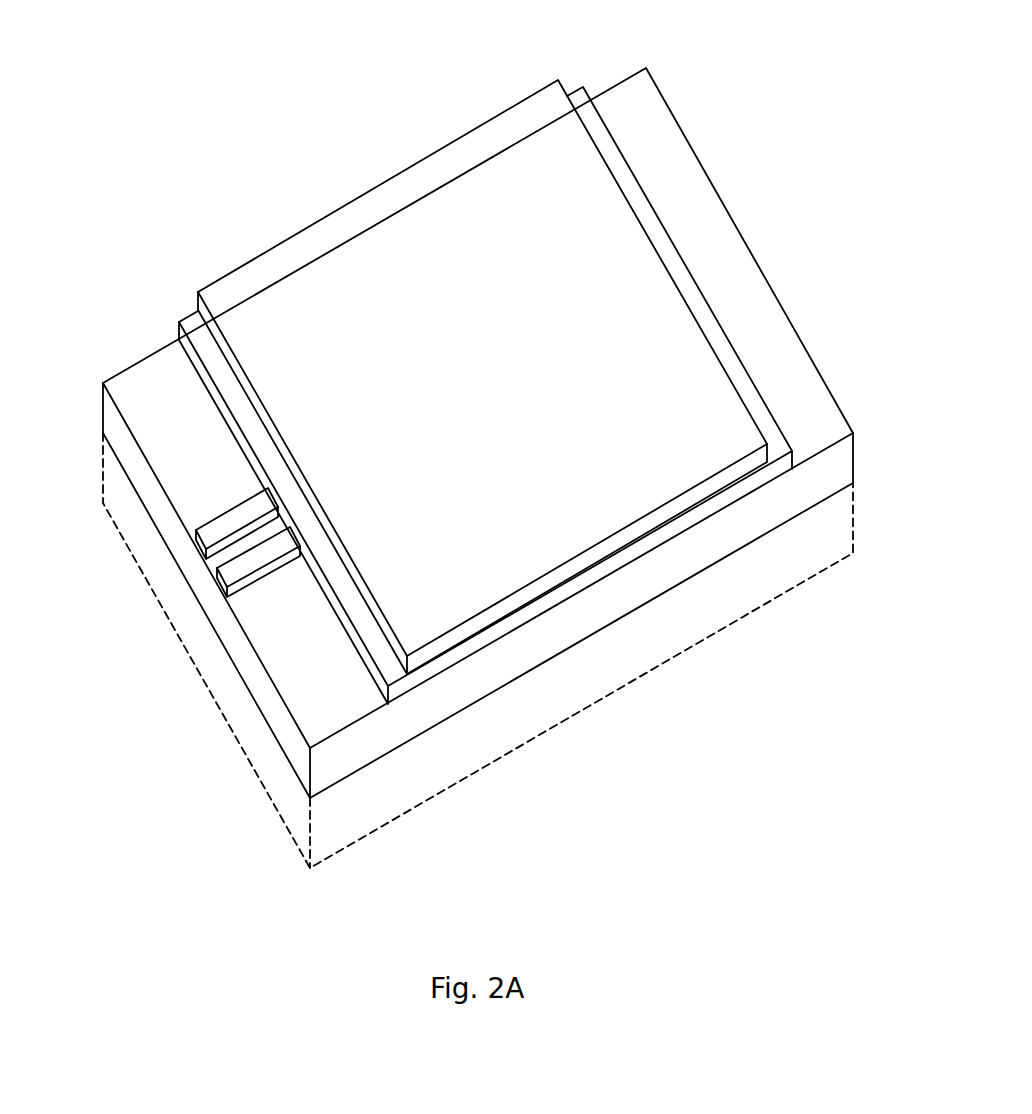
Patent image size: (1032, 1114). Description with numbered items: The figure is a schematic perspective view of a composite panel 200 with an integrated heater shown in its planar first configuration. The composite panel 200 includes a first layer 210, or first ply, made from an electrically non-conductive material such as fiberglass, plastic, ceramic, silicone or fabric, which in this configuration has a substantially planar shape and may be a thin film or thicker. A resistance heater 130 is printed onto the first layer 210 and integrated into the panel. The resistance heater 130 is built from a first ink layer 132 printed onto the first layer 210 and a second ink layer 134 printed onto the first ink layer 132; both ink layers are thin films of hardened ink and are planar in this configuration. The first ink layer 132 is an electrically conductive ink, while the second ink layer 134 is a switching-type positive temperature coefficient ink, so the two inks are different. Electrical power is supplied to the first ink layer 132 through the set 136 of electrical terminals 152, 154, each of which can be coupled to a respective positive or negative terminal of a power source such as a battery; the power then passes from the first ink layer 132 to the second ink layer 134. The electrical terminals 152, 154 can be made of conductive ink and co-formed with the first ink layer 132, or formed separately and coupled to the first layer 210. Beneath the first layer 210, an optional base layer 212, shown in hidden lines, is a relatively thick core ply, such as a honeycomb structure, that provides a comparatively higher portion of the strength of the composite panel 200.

The composite panel 200 is at (730, 52).
The resistance heater 130 is at (431, 136).
The first ink layer 132 is at (623, 558).
The second ink layer 134 is at (683, 500).
The set of electrical terminals 136 is at (196, 608).
The electrical terminal 152 is at (210, 537).
The electrical terminal 154 is at (230, 572).
The first layer 210 is at (450, 693).
The base layer 212 is at (602, 670).